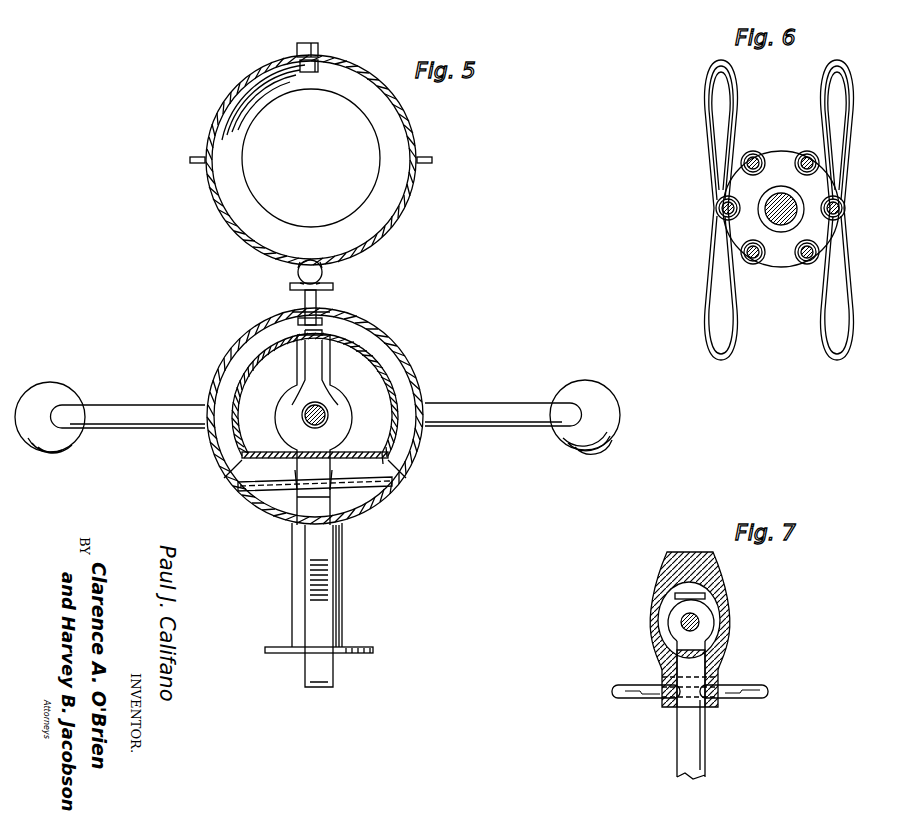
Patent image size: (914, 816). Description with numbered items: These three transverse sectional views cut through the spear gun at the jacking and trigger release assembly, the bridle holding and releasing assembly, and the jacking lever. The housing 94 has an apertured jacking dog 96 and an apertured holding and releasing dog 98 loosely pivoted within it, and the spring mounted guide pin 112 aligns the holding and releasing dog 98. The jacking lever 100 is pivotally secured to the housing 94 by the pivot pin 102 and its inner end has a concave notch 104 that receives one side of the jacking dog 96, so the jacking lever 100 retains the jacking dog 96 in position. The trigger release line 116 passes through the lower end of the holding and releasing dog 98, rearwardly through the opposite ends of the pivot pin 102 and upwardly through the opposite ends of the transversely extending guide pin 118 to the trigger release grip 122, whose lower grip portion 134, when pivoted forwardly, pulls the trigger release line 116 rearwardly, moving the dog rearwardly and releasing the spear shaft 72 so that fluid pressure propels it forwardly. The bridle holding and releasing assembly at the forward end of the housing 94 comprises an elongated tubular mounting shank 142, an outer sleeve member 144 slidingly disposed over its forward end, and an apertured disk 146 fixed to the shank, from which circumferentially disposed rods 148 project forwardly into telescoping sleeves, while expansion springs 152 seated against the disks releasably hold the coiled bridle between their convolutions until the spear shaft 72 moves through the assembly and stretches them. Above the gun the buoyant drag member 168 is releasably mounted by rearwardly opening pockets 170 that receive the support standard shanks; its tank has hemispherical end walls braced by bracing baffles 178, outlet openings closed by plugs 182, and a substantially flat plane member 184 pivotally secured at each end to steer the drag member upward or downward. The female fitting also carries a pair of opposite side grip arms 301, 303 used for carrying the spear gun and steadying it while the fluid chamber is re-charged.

In FIG. 5, the buoyant drag member 168 is at (212, 98).
In FIG. 5, the bracing baffle 178 is at (357, 204).
In FIG. 5, the plug 182 is at (320, 49).
In FIG. 5, the plane member 184 is at (436, 161).
In FIG. 5, the pocket 170 is at (323, 273).
In FIG. 5, the spring mounted guide pin 112 is at (290, 287).
In FIG. 5, the housing 94 is at (394, 366).
In FIG. 7, the housing 94 is at (670, 580).
In FIG. 5, the holding and releasing dog 98 is at (305, 355).
In FIG. 5, the spear shaft 72 is at (308, 410).
In FIG. 6, the spear shaft 72 is at (779, 194).
In FIG. 7, the spear shaft 72 is at (682, 626).
In FIG. 5, the pivot pin 102 is at (386, 480).
In FIG. 5, the side grip arm 301 is at (146, 410).
In FIG. 5, the side grip arm 303 is at (508, 410).
In FIG. 5, the grip portion 134 is at (292, 598).
In FIG. 5, the trigger release grip 122 is at (348, 553).
In FIG. 5, the jacking lever 100 is at (324, 602).
In FIG. 7, the jacking lever 100 is at (706, 740).
In FIG. 6, the apertured disk 146 is at (736, 200).
In FIG. 6, the outer sleeve member 144 is at (758, 225).
In FIG. 6, the tubular mounting shank 142 is at (802, 214).
In FIG. 6, the rods 148 is at (803, 155).
In FIG. 6, the expansion springs 152 is at (819, 166).
In FIG. 7, the jacking dog 96 is at (712, 630).
In FIG. 7, the concave notch 104 is at (665, 686).
In FIG. 7, the trigger release line 116 is at (642, 698).
In FIG. 7, the guide pin 118 is at (752, 690).